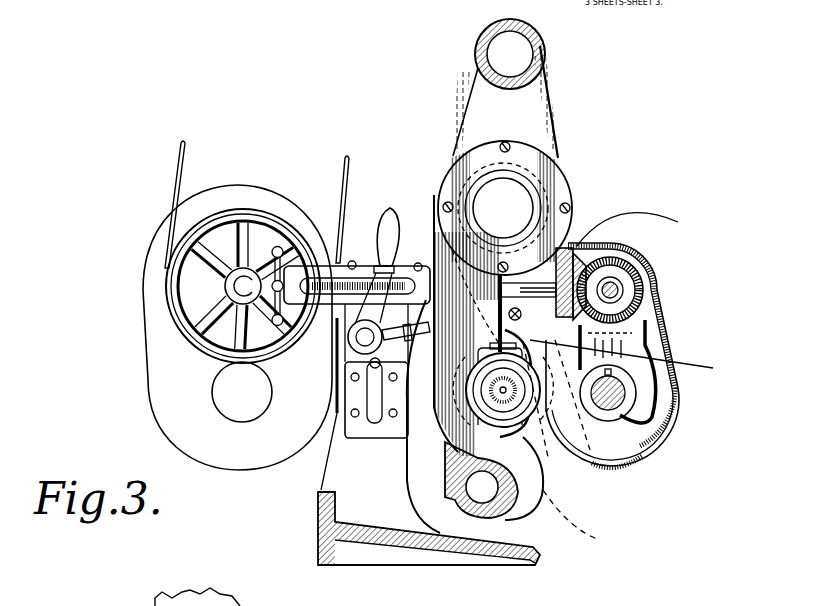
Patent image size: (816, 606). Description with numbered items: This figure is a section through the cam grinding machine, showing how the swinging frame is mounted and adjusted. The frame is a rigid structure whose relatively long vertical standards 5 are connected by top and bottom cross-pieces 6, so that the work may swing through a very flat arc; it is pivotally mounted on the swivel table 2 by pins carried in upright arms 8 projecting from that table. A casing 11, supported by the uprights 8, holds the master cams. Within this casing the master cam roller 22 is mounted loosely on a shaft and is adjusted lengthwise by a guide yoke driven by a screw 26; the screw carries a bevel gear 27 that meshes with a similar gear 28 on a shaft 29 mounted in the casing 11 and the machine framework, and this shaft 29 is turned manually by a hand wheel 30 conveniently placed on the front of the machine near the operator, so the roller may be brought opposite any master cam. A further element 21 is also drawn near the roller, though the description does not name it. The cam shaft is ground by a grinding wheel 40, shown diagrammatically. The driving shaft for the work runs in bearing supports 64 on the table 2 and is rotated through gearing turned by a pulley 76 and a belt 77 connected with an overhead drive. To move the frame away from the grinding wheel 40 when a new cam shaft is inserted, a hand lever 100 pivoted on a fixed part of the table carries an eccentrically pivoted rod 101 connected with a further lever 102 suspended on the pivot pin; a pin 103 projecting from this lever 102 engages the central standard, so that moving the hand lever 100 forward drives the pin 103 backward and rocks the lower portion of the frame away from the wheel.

The swivel table 2 is at (344, 497).
The vertical standard 5 is at (537, 108).
The cross-piece 6 is at (540, 44).
The upright arm 8 is at (343, 455).
The casing 11 is at (672, 325).
The lower guide pulley 21 is at (533, 423).
The master cam roller 22 is at (623, 445).
The screw 26 is at (618, 288).
The bevel gear 27 is at (640, 295).
The bevel gear 28 is at (602, 245).
The shaft 29 is at (522, 318).
The hand wheel 30 is at (280, 247).
The grinding wheel 40 is at (602, 540).
The bearing support 64 is at (165, 376).
The pulley 76 is at (168, 298).
The belt 77 is at (185, 146).
The hand lever 100 is at (391, 207).
The rod 101 is at (430, 422).
The lever 102 is at (545, 233).
The pin 103 is at (637, 359).